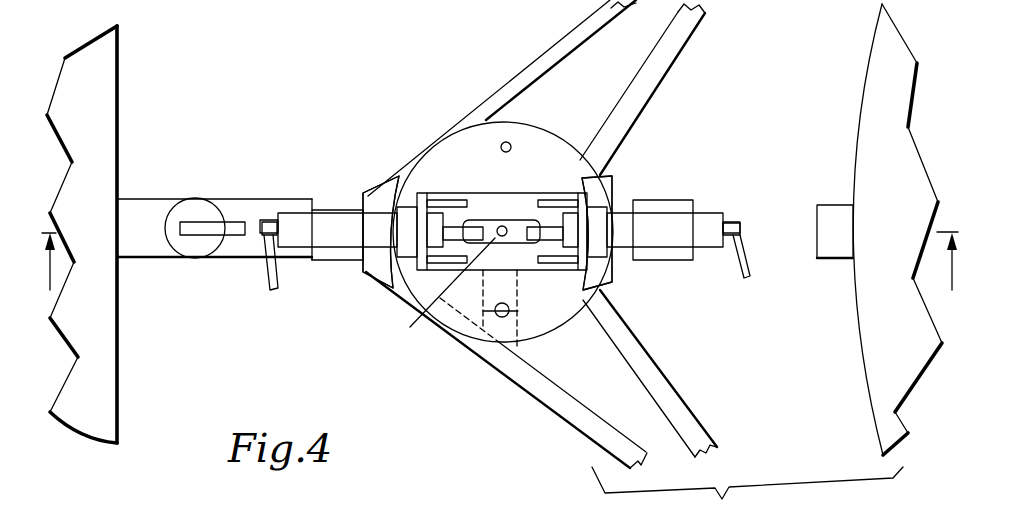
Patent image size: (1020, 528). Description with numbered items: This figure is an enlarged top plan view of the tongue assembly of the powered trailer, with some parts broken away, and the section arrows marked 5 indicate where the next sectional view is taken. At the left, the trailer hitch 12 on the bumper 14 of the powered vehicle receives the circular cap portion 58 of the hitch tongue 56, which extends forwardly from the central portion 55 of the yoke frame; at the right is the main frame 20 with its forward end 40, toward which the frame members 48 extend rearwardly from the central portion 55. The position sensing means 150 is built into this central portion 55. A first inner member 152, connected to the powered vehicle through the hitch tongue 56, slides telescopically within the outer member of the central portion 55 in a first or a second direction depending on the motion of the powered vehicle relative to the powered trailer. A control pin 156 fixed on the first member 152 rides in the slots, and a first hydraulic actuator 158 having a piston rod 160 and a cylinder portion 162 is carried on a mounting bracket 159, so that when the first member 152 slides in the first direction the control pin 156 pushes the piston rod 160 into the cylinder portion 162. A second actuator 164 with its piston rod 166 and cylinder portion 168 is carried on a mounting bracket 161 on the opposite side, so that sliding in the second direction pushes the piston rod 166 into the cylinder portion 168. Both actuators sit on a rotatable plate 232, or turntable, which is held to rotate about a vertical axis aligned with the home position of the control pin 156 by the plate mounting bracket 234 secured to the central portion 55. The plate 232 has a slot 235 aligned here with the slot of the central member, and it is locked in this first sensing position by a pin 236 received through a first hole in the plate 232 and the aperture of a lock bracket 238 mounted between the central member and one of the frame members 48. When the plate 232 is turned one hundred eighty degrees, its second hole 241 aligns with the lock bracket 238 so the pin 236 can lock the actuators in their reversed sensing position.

The section line 5- 5 is at (500, 247).
The trailer hitch 12 is at (137, 250).
The bumper 14 is at (100, 65).
The main frame 20 is at (901, 337).
The forward end 40 is at (873, 100).
The frame members 48 is at (670, 38).
The central portion 55 is at (375, 195).
The hitch tongue 56 is at (247, 205).
The circular cap portion 58 is at (193, 202).
The position sensing means 150 is at (500, 60).
The first inner member 152 is at (352, 207).
The control pin 156 is at (500, 236).
The first hydraulic actuator 158 is at (288, 252).
The mounting bracket 159 is at (432, 185).
The piston rod 160 is at (453, 228).
The mounting bracket 161 is at (590, 198).
The cylinder portion 162 is at (350, 240).
The second actuator 164 is at (712, 250).
The piston rod 166 is at (552, 230).
The cylinder portion 168 is at (672, 237).
The rotatable plate 232 is at (457, 138).
The plate mounting bracket 234 is at (405, 277).
The slot 235 is at (410, 327).
The pin 236 is at (510, 316).
The lock bracket 238 is at (528, 358).
The second hole 241 is at (506, 141).